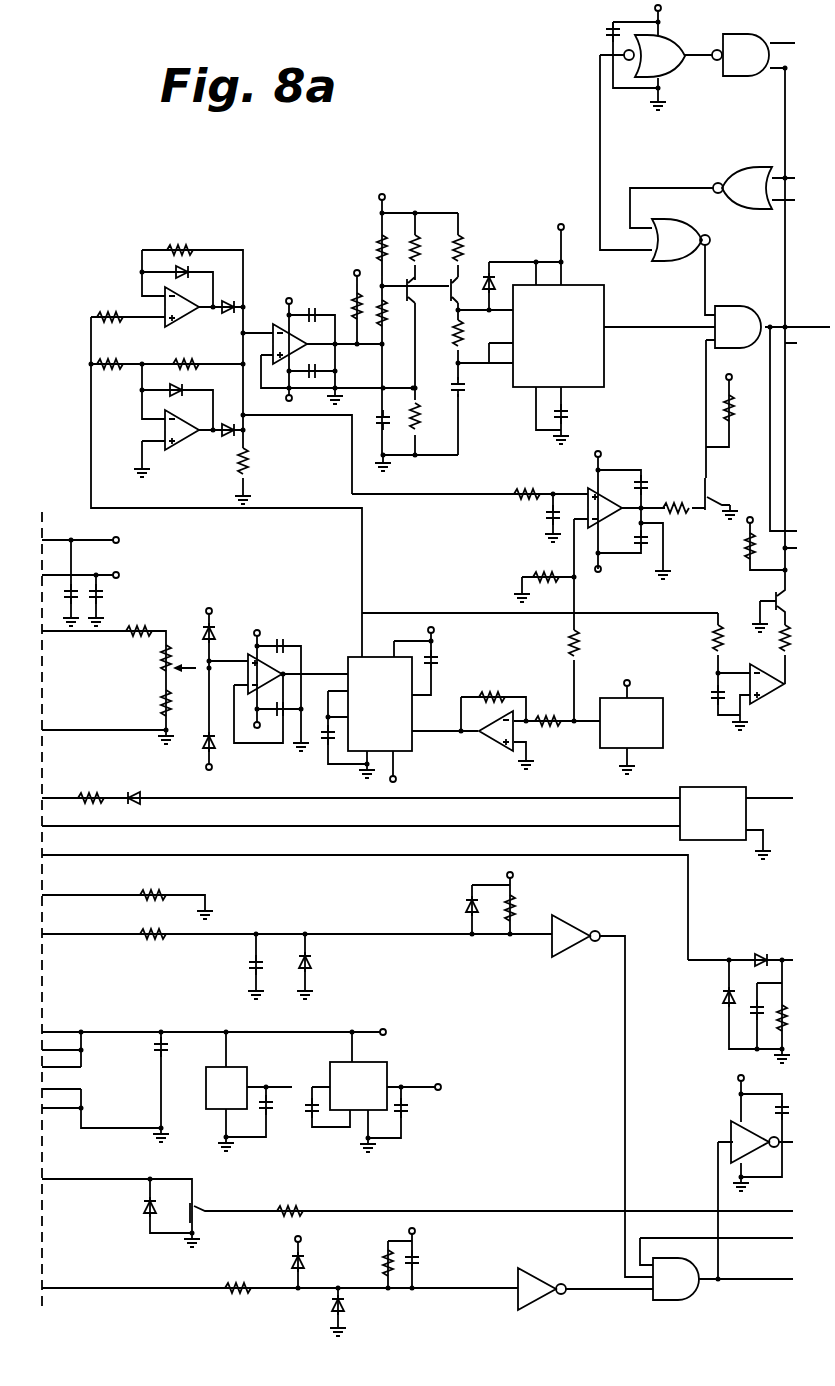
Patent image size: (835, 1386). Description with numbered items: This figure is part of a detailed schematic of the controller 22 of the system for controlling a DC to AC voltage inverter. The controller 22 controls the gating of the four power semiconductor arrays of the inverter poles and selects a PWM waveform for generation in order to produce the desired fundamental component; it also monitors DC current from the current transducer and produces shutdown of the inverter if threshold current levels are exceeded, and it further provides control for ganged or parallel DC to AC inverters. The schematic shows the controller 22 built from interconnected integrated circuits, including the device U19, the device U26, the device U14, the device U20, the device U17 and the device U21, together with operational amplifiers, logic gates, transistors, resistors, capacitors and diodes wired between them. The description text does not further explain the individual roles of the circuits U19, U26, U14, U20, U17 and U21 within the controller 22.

The controller 22 is at (503, 112).
The timer integrated circuit LM555 U19 is at (543, 334).
The RMS-to-DC converter AD536A U26 is at (379, 704).
The voltage reference MC1403 U14 is at (631, 727).
The optocoupler PS2501-2 U20 is at (736, 823).
The voltage regulator U17 is at (249, 1091).
The voltage converter LT1054 U21 is at (373, 1092).